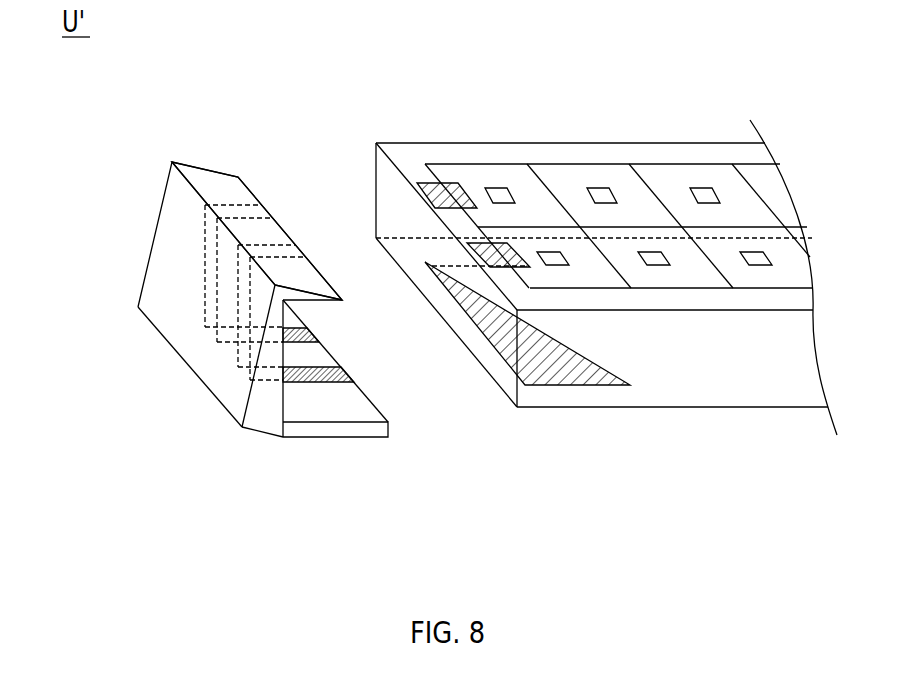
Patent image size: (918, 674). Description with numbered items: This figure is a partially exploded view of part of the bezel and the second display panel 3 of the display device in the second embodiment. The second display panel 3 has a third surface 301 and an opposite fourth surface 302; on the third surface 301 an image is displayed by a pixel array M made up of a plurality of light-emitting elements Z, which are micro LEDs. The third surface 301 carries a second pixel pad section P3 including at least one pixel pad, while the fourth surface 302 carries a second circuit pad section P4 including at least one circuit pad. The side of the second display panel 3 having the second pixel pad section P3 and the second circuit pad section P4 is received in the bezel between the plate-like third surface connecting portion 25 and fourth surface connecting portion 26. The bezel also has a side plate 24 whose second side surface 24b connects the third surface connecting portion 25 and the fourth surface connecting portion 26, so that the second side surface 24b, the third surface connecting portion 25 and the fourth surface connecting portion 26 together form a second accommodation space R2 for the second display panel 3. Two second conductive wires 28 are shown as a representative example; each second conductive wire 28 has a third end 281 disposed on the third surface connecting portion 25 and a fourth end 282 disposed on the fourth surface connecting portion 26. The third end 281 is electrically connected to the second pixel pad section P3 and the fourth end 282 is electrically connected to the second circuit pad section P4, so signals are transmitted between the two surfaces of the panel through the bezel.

The second display panel 3 is at (690, 122).
The third surface 301 is at (507, 158).
The fourth surface 302 is at (673, 408).
The light-emitting element Z is at (593, 188).
The pixel array M is at (602, 163).
The second pixel pad section P3 is at (417, 183).
The second circuit pad section P4 is at (553, 385).
The side plate 24 is at (265, 395).
The second side surface 24b is at (285, 408).
The third surface connecting portion 25 is at (199, 177).
The fourth surface connecting portion 26 is at (348, 430).
The second conductive wire 28 is at (213, 293).
The third end 281 is at (241, 207).
The fourth end 282 is at (320, 367).
The second accommodation space R2 is at (342, 393).